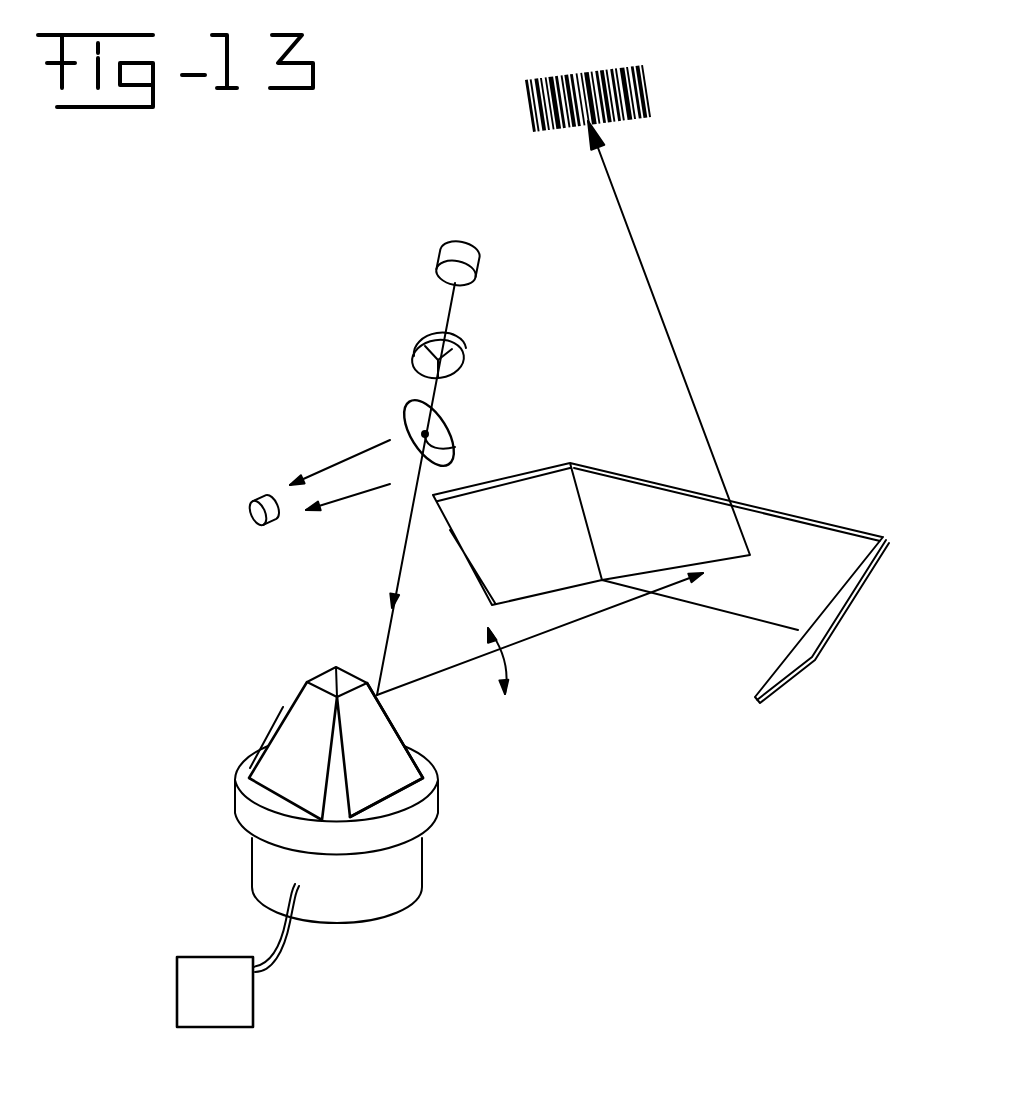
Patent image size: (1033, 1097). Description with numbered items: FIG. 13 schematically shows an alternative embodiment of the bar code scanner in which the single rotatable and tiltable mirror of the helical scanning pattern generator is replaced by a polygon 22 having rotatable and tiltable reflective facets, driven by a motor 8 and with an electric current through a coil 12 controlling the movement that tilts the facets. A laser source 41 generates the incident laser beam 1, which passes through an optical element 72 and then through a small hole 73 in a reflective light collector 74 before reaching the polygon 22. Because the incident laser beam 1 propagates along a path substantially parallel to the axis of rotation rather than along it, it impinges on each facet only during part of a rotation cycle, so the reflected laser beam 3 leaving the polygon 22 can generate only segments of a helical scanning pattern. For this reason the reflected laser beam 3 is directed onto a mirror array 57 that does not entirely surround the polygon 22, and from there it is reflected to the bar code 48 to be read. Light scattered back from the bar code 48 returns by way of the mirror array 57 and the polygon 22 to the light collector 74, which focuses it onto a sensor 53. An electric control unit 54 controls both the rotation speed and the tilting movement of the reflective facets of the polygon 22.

The incident laser beam 1 is at (397, 566).
The reflected laser beam 3 is at (577, 622).
The motor 8 is at (398, 897).
The coil 12 is at (422, 820).
The polygon 22 is at (284, 712).
The laser source 41 is at (455, 263).
The bar code 48 is at (588, 70).
The sensor 53 is at (258, 503).
The electric control unit 54 is at (205, 978).
The mirror array 57 is at (668, 482).
The lens 72 is at (425, 355).
The small hole 73 is at (455, 447).
The reflective light collector 74 is at (428, 412).